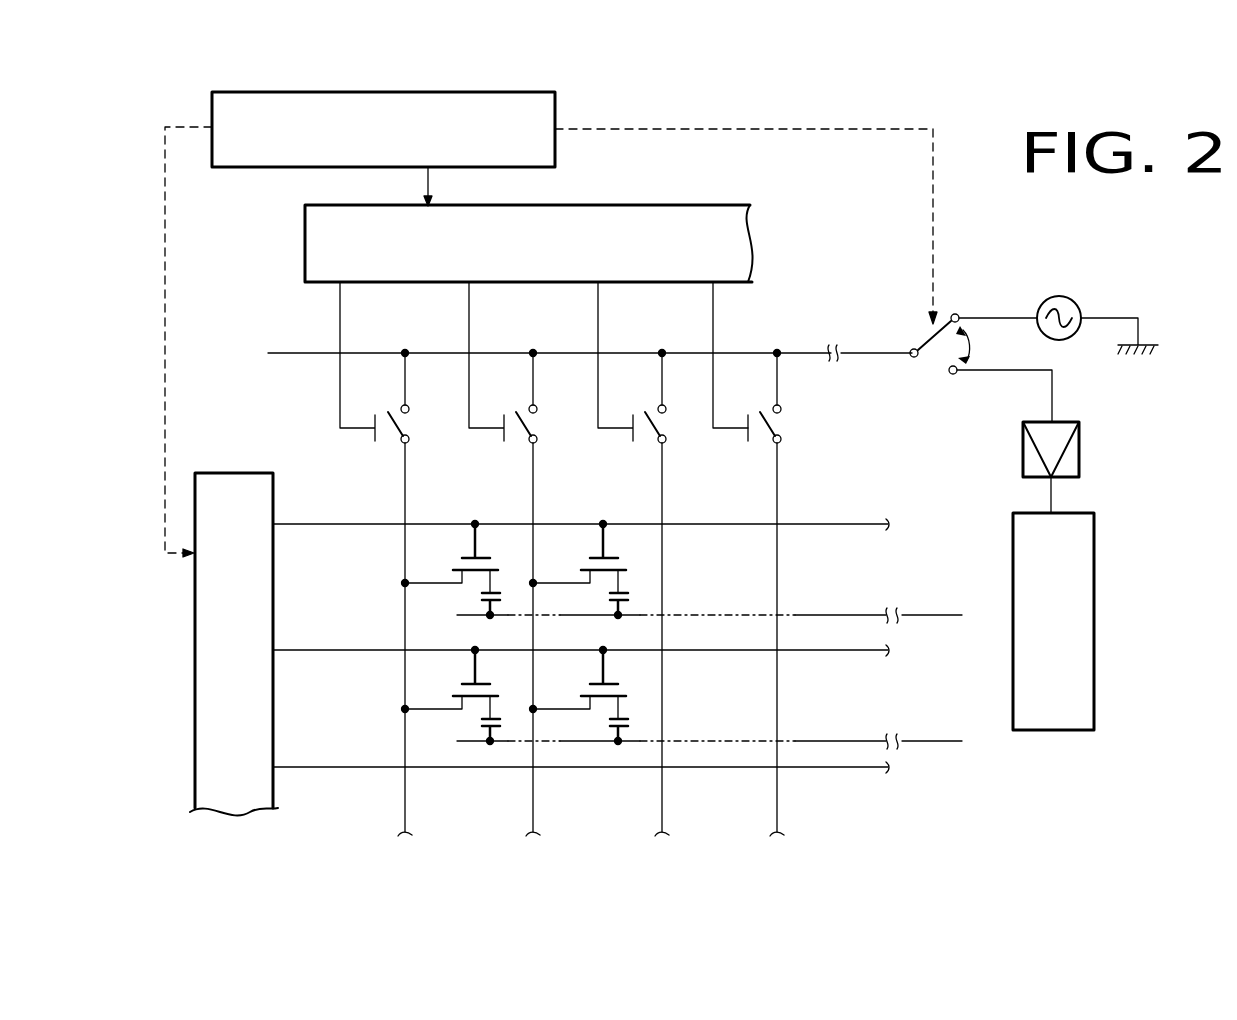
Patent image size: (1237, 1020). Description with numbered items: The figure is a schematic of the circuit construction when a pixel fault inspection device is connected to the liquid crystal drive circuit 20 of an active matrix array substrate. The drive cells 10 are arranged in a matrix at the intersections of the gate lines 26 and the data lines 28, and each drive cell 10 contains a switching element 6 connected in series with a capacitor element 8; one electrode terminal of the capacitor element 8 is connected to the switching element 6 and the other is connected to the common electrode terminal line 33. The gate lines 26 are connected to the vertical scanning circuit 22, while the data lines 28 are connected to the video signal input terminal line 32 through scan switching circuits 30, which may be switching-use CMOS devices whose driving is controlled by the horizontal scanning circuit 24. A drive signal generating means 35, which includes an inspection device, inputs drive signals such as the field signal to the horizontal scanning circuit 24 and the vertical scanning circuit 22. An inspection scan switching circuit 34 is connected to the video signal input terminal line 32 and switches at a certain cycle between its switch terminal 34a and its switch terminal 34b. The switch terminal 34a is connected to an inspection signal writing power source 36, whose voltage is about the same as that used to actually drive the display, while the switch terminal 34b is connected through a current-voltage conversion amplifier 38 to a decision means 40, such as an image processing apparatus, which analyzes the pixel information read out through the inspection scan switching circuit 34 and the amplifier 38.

The drive signal generating means 35 is at (555, 98).
The horizontal scanning circuit 24 is at (683, 205).
The liquid crystal drive circuit 20 is at (243, 349).
The video signal input terminal line 32 is at (735, 353).
The scan switching circuit 30 is at (388, 412).
The data line 28 is at (405, 476).
The vertical scanning circuit 22 is at (195, 730).
The gate line 26 is at (322, 524).
The common electrode terminal line 33 is at (833, 615).
The switching element 6 is at (488, 555).
The capacitor element 8 is at (608, 724).
The drive cell 10 is at (460, 557).
The inspection scan switching circuit 34 is at (923, 344).
The switch terminal 34a is at (957, 312).
The switch terminal 34b is at (953, 375).
The inspection signal writing power source 36 is at (1055, 296).
The current-voltage conversion amplifier 38 is at (1079, 446).
The decision means 40 is at (1094, 577).